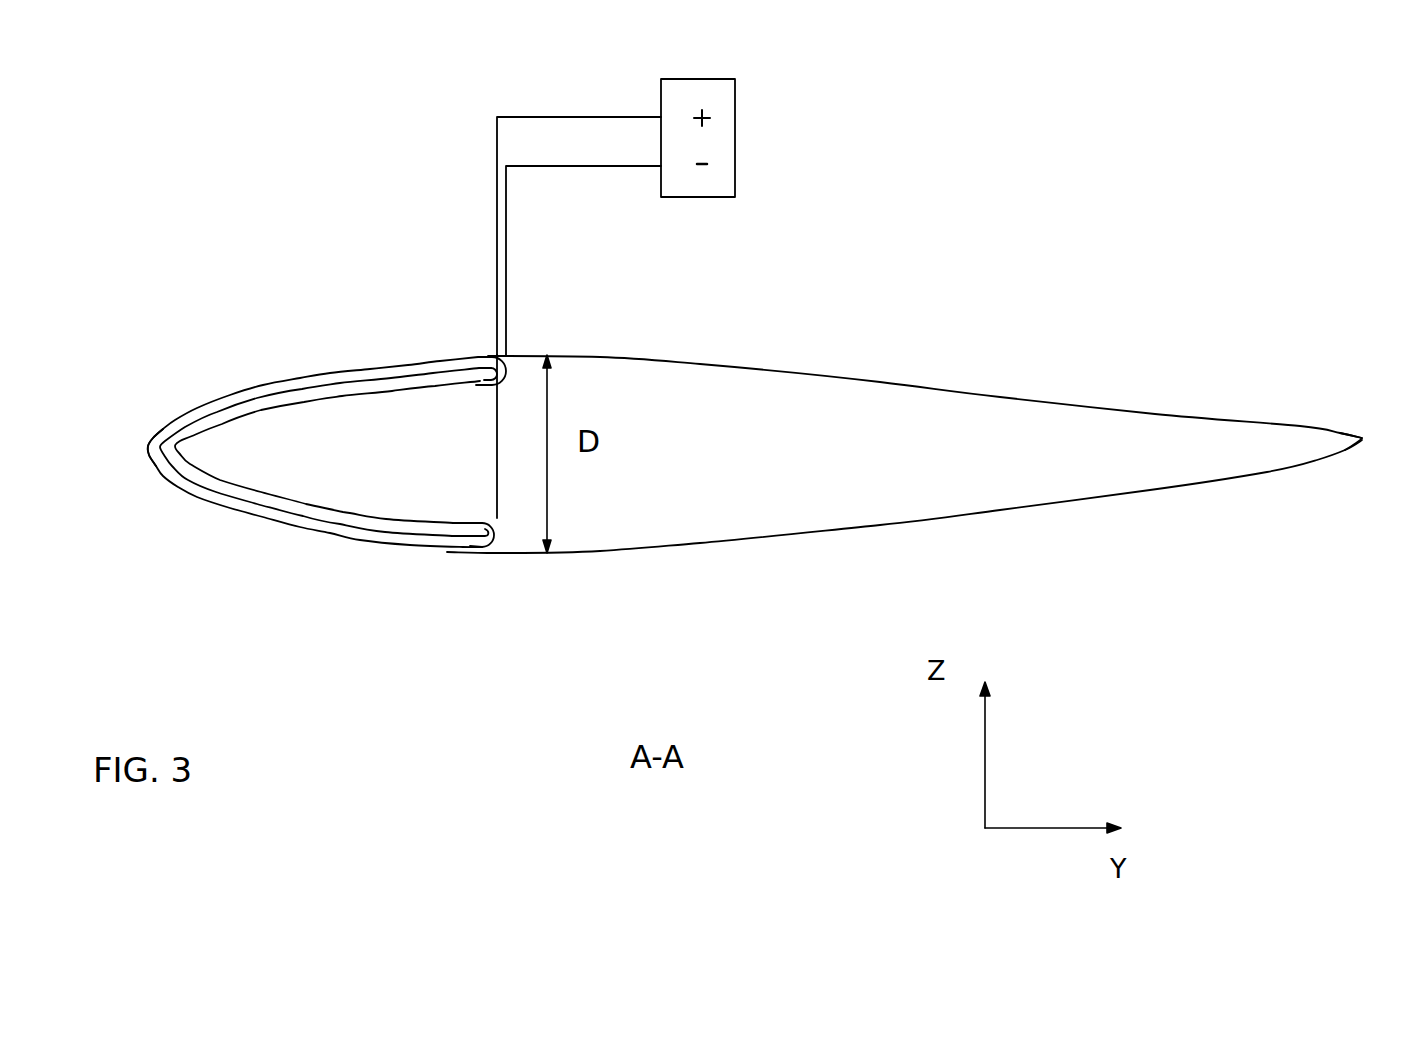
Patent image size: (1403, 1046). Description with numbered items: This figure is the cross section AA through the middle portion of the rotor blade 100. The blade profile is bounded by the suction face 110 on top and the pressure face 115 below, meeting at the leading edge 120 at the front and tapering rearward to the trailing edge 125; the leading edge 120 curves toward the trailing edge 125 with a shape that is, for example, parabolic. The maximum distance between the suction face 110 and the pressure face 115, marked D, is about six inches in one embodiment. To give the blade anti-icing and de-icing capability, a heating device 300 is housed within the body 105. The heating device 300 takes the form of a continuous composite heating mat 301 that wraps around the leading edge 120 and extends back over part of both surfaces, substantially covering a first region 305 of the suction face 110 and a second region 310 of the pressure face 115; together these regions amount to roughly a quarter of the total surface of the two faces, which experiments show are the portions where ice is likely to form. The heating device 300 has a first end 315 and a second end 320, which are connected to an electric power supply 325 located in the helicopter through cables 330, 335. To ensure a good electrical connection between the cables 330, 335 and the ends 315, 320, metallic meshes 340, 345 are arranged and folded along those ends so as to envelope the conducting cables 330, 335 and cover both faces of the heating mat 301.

The rotor blade 100 is at (1024, 314).
The body 105 is at (1160, 410).
The suction face 110 is at (573, 355).
The pressure face 115 is at (568, 555).
The leading edge 120 is at (150, 441).
The trailing edge 125 is at (1362, 440).
The heating device 300 is at (407, 352).
The composite heating mat 301 is at (312, 392).
The first region 305 is at (267, 383).
The second region 310 is at (300, 527).
The first end 315 is at (490, 354).
The second end 320 is at (470, 533).
The electric power supply 325 is at (736, 122).
The cable 330 is at (506, 200).
The cable 335 is at (497, 468).
The metallic mesh 340 is at (477, 373).
The metallic mesh 345 is at (483, 544).